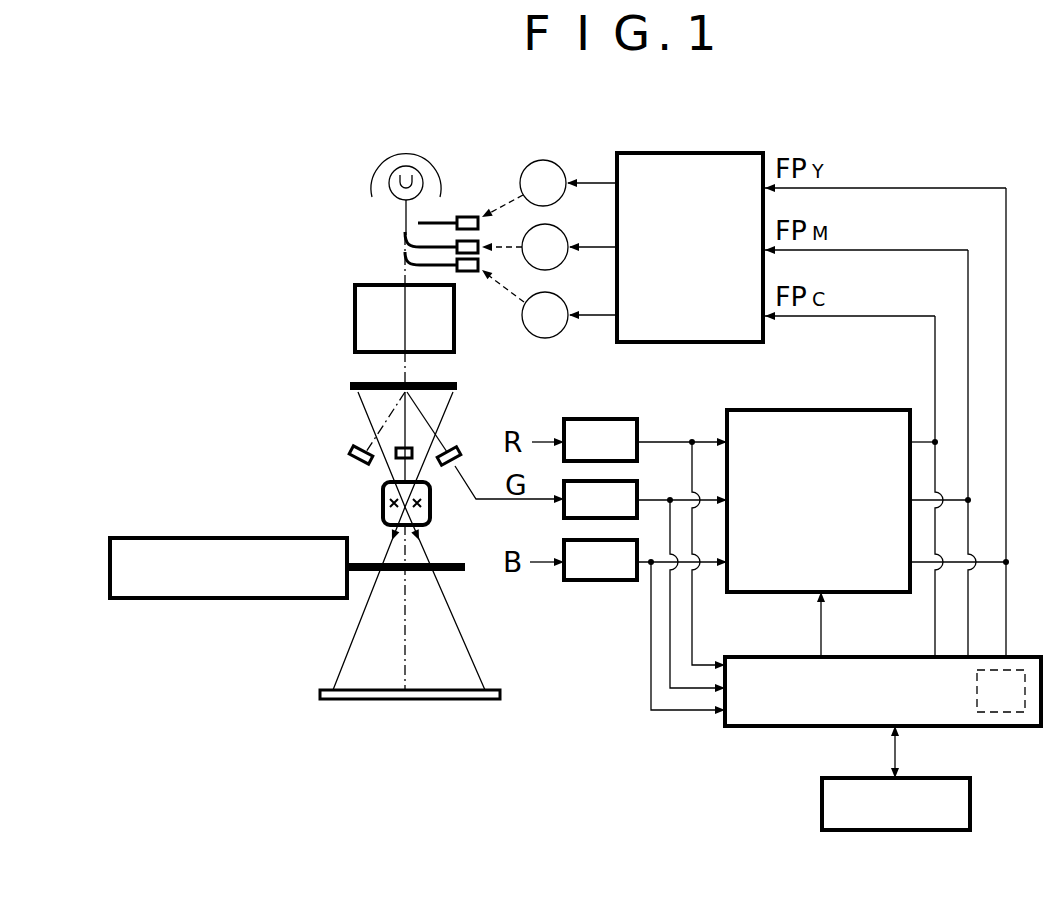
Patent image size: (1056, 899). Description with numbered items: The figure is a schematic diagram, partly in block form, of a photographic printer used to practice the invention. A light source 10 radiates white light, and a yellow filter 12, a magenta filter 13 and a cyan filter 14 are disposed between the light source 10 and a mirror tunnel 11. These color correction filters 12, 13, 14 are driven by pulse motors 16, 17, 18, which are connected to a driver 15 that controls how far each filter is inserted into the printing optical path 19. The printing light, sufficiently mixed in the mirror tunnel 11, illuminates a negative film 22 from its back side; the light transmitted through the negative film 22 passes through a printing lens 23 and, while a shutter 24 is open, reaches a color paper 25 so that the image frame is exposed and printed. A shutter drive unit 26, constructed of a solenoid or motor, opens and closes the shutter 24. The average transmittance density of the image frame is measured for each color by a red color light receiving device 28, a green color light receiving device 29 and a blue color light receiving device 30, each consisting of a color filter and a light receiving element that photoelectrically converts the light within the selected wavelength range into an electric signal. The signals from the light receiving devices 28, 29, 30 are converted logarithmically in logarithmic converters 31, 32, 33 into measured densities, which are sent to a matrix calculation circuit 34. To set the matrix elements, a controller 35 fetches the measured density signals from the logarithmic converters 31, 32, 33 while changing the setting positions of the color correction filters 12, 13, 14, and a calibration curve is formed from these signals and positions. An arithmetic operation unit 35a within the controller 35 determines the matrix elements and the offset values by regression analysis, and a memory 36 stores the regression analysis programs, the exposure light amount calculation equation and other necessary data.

The light source 10 is at (383, 172).
The mirror tunnel 11 is at (358, 317).
The yellow filter 12 is at (445, 220).
The magenta filter 13 is at (405, 232).
The cyan filter 14 is at (405, 255).
The driver 15 is at (676, 152).
The pulse motor 16 is at (553, 160).
The pulse motor 17 is at (558, 228).
The pulse motor 18 is at (556, 337).
The printing optical path 19 is at (412, 378).
The negative film 22 is at (358, 383).
The printing lens 23 is at (432, 505).
The shutter 24 is at (460, 572).
The color paper 25 is at (320, 690).
The shutter drive unit 26 is at (283, 538).
The red color light receiving device 28 is at (413, 448).
The green color light receiving device 29 is at (458, 449).
The blue color light receiving device 30 is at (350, 449).
The logarithmic converter 31 is at (612, 418).
The logarithmic converter 32 is at (637, 482).
The logarithmic converter 33 is at (597, 580).
The matrix calculation circuit 34 is at (826, 410).
The controller 35 is at (773, 727).
The arithmetic operation unit 35a is at (1007, 700).
The memory 36 is at (822, 808).